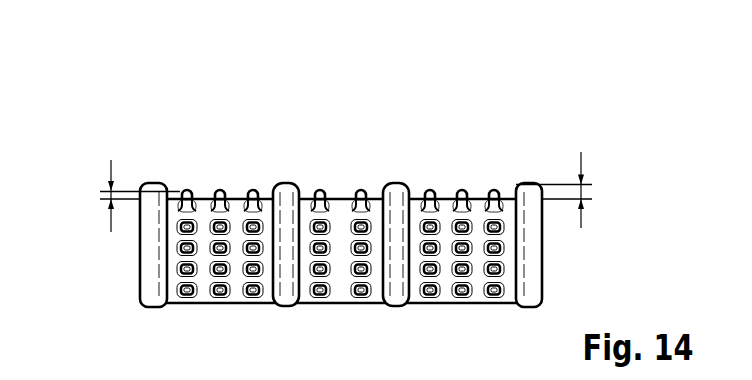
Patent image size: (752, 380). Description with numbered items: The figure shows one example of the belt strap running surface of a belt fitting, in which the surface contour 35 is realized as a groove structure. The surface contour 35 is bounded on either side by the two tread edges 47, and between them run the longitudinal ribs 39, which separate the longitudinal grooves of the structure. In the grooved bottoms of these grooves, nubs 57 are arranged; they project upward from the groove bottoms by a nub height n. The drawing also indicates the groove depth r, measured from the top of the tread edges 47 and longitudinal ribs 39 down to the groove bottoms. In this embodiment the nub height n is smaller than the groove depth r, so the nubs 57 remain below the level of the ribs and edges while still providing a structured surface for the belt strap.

The surface contour 35 is at (557, 103).
The longitudinal ribs 39 is at (396, 184).
The tread edges 47 is at (542, 184).
The nubs 57 is at (220, 190).
The nub height n is at (100, 196).
The groove depth r is at (582, 191).